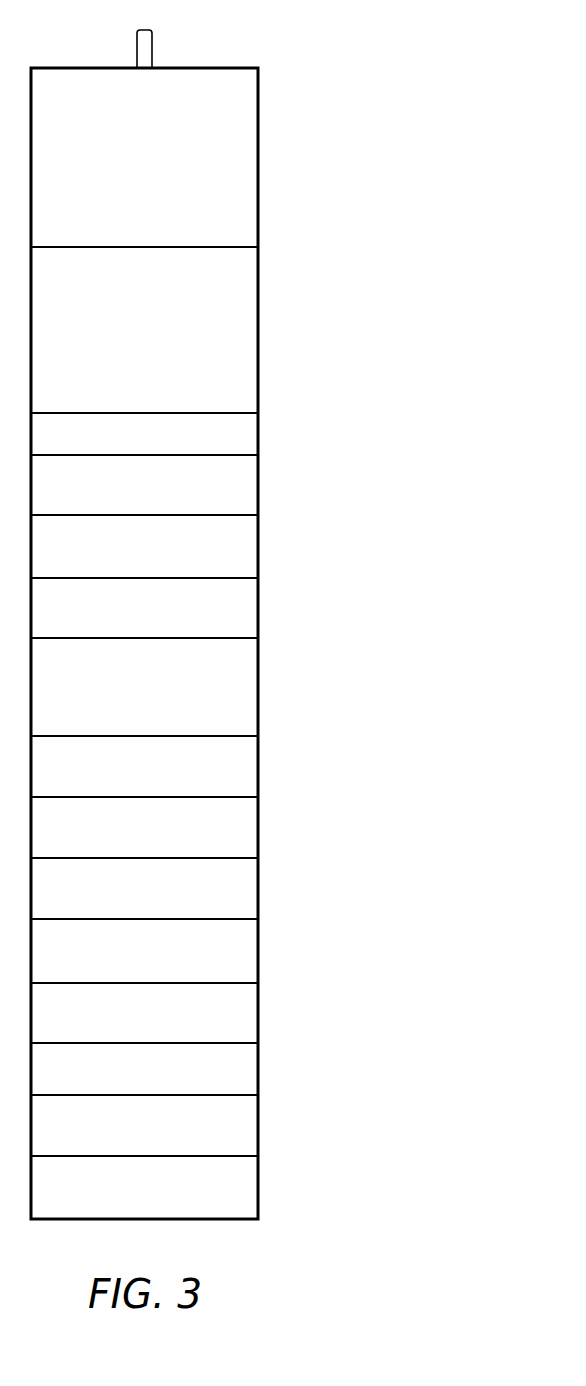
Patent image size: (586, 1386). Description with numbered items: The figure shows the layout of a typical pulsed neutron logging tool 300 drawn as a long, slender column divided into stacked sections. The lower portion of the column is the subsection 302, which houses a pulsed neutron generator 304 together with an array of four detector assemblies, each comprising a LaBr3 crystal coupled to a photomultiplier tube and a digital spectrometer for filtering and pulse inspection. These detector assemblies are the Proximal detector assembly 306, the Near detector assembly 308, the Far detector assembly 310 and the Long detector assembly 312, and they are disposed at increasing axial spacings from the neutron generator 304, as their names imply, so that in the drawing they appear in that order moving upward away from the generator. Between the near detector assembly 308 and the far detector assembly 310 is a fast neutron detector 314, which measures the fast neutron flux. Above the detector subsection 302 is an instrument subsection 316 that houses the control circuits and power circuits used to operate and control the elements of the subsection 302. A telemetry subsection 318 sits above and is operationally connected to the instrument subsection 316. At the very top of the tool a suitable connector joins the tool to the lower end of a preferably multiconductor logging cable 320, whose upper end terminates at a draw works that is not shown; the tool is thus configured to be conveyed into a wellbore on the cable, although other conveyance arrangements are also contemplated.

The pulsed neutron logging tool 300 is at (282, 118).
The subsection 302 is at (182, 706).
The pulsed neutron generator 304 is at (218, 1136).
The Proximal detector assembly 306 is at (228, 1025).
The Near detector assembly 308 is at (225, 900).
The Far detector assembly 310 is at (217, 613).
The Long detector assembly 312 is at (222, 493).
The fast neutron detector 314 is at (227, 787).
The instrument subsection 316 is at (212, 387).
The telemetry subsection 318 is at (212, 237).
The logging cable 320 is at (143, 55).